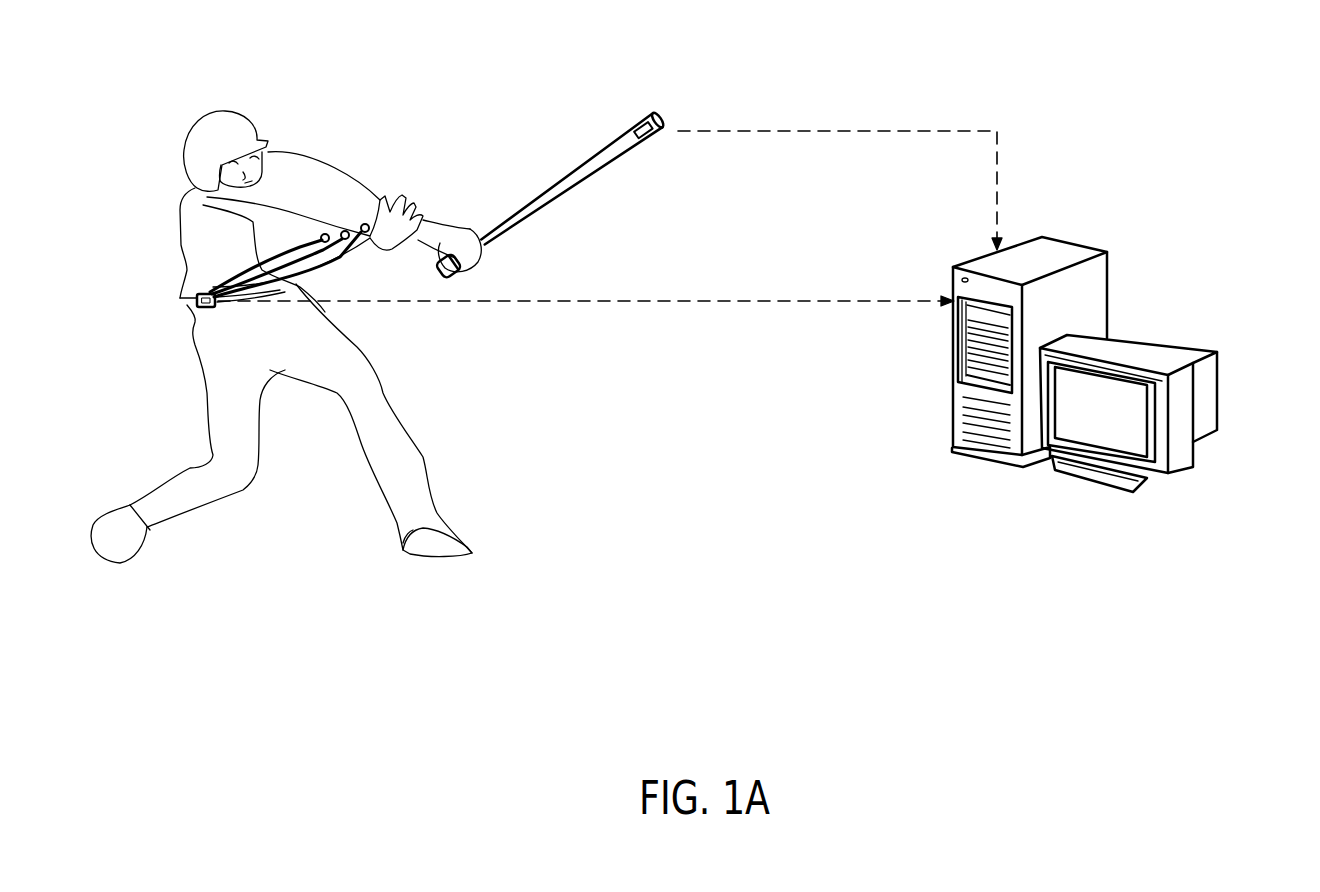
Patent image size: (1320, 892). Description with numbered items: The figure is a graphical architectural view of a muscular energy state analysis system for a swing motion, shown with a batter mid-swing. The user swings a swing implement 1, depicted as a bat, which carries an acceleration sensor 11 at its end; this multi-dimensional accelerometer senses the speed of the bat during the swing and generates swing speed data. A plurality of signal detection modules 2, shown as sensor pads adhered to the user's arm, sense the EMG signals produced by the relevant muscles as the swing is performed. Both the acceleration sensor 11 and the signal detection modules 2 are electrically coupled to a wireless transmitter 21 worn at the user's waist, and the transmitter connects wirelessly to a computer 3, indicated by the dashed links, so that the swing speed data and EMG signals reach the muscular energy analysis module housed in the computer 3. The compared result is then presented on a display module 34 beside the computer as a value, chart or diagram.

The swing implement 1 is at (572, 163).
The acceleration sensor 11 is at (643, 107).
The signal detection modules 2 is at (362, 205).
The wireless transmitter 21 is at (205, 298).
The computer 3 is at (1077, 248).
The display module 34 is at (1177, 340).